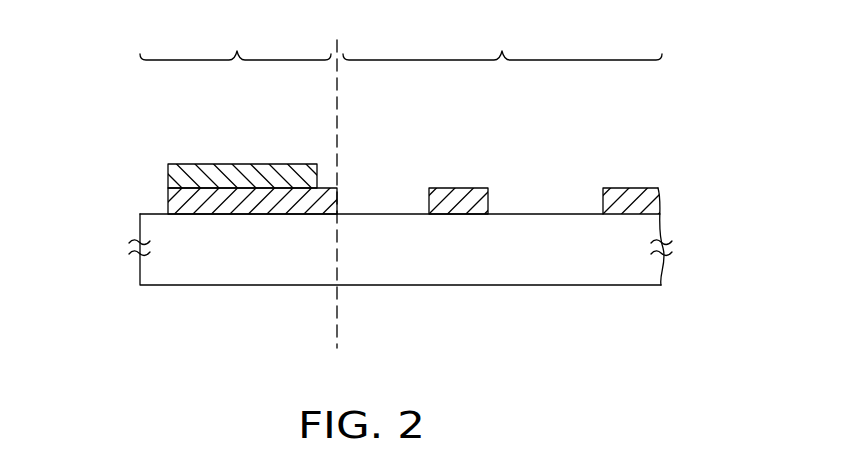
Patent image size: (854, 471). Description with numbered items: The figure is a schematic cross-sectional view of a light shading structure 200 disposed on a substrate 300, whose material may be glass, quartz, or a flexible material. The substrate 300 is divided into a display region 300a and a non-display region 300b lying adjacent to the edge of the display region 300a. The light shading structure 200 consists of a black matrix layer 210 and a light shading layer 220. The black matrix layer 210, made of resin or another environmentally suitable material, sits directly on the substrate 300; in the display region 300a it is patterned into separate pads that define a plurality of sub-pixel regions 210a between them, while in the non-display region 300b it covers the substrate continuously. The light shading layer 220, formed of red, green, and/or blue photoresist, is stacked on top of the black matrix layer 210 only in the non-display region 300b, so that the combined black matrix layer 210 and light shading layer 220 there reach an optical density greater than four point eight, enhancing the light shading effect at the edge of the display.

The light shading structure 200 is at (178, 154).
The black matrix layer 210 is at (175, 207).
The sub-pixel regions 210a is at (540, 192).
The light shading layer 220 is at (178, 176).
The substrate 300 is at (152, 271).
The display region 300a is at (502, 42).
The non-display region 300b is at (235, 42).